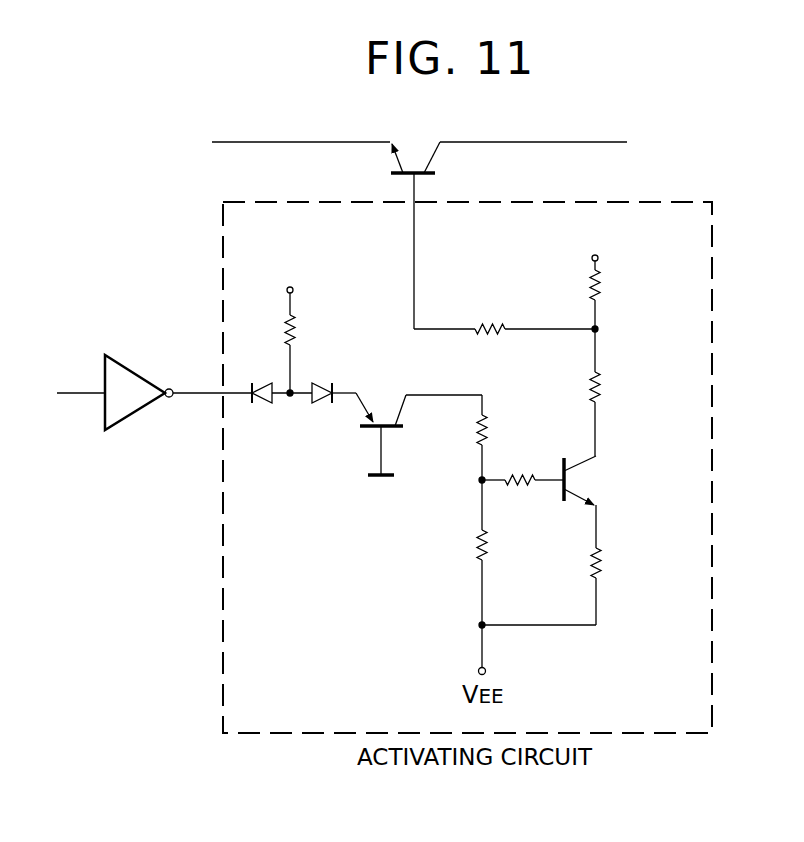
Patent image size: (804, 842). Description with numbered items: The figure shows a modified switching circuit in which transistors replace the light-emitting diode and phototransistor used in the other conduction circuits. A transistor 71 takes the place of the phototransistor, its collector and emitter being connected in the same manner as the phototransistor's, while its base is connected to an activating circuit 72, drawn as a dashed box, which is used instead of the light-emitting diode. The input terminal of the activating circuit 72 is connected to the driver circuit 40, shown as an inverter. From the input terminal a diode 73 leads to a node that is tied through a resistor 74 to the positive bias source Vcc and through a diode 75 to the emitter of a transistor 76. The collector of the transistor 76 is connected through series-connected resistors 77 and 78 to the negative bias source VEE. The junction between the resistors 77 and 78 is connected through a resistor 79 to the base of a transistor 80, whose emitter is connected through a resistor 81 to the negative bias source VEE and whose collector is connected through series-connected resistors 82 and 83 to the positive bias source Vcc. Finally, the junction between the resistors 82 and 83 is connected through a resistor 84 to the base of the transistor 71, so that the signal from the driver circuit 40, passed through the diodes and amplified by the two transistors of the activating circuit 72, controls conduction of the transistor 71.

The driver circuit 40 is at (138, 372).
The transistor 71 is at (415, 159).
The activating circuit 72 is at (222, 660).
The diode 73 is at (263, 402).
The resistor 74 is at (296, 333).
The diode 75 is at (322, 402).
The transistor 76 is at (381, 405).
The resistor 77 is at (488, 434).
The resistor 78 is at (478, 551).
The resistor 79 is at (522, 490).
The transistor 80 is at (572, 482).
The resistor 81 is at (602, 566).
The resistor 82 is at (601, 390).
The resistor 83 is at (601, 290).
The resistor 84 is at (493, 320).